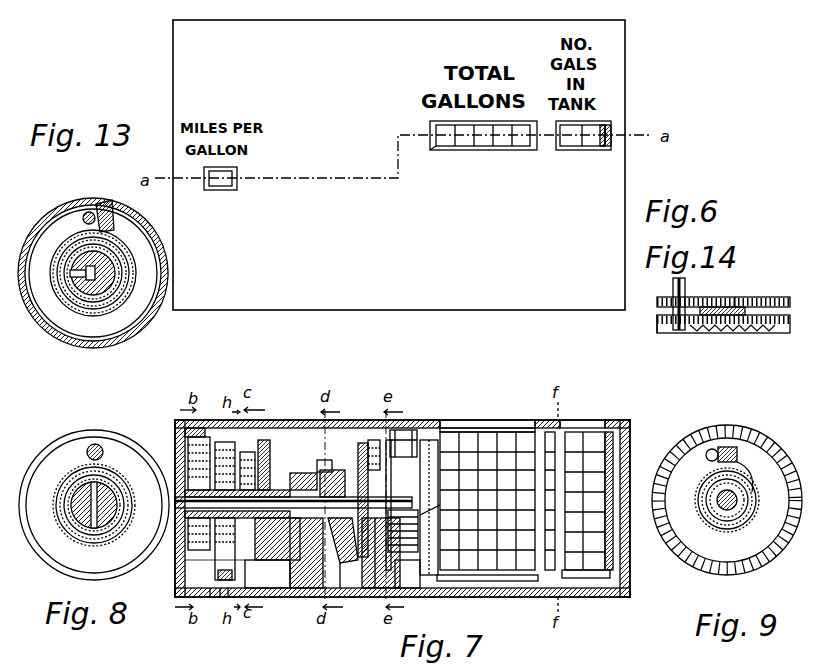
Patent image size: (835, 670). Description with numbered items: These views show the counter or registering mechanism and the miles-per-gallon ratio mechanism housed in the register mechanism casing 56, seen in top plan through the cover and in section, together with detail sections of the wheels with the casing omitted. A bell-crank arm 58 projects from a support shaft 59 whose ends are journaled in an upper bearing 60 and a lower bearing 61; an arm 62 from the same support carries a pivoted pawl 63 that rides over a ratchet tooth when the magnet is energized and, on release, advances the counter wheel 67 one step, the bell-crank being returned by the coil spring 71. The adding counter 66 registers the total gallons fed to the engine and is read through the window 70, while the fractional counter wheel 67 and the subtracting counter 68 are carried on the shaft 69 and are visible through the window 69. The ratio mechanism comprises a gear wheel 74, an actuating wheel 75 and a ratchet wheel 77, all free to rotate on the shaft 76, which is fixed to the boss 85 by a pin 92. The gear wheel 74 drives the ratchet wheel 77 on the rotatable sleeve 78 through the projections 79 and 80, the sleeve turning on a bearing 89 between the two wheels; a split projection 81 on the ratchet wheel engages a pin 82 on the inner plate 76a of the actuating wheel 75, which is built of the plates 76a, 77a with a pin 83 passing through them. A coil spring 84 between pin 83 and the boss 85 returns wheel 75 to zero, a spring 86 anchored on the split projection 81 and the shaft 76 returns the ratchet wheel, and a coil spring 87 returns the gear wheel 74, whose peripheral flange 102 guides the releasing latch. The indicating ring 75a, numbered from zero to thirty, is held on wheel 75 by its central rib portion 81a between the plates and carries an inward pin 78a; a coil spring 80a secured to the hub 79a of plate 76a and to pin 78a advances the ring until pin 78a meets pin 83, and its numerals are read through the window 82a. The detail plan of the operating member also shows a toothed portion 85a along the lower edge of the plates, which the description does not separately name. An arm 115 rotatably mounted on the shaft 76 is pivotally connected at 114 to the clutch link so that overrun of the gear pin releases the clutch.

In FIG. 7, the register mechanism casing 56 is at (630, 445).
In FIG. 7, the bell-crank arm 58 is at (490, 470).
In FIG. 7, the shaft 59 is at (418, 535).
In FIG. 7, the upper bearing 60 is at (438, 436).
In FIG. 7, the lower bearing 61 is at (415, 565).
In FIG. 7, the arm 62 is at (456, 442).
In FIG. 7, the pawl 63 is at (548, 435).
In FIG. 6, the adding counter 66 is at (496, 149).
In FIG. 7, the adding counter 66 is at (510, 570).
In FIG. 6, the counter wheel 67 is at (577, 149).
In FIG. 7, the counter wheel 67 is at (575, 572).
In FIG. 6, the subtracting counter 68 is at (594, 148).
In FIG. 7, the subtracting counter 68 is at (598, 574).
In FIG. 6, the shaft 69 is at (590, 122).
In FIG. 7, the shaft 69 is at (590, 425).
In FIG. 6, the window 70 is at (458, 150).
In FIG. 7, the window 70 is at (509, 425).
In FIG. 7, the coil spring 71 is at (475, 530).
In FIG. 7, the gear wheel 74 is at (388, 440).
In FIG. 14, the actuating wheel 75 is at (772, 295).
In FIG. 13, the actuating wheel 75 is at (75, 240).
In FIG. 8, the actuating wheel 75 is at (83, 537).
In FIG. 9, the actuating wheel 75 is at (757, 463).
In FIG. 7, the actuating wheel 75 is at (205, 565).
In FIG. 13, the indicating ring 75a is at (96, 337).
In FIG. 8, the indicating ring 75a is at (72, 440).
In FIG. 7, the indicating ring 75a is at (247, 452).
In FIG. 13, the shaft 76 is at (62, 315).
In FIG. 8, the shaft 76 is at (110, 490).
In FIG. 7, the shaft 76 is at (292, 495).
In FIG. 14, the inner plate 76a is at (657, 326).
In FIG. 7, the inner plate 76a is at (228, 598).
In FIG. 7, the ratchet wheel 77 is at (270, 440).
In FIG. 14, the plate 77a is at (730, 300).
In FIG. 7, the rotatable sleeve 78 is at (302, 472).
In FIG. 13, the pin 78a is at (114, 216).
In FIG. 7, the projection 79 is at (325, 462).
In FIG. 14, the hub 79a is at (762, 334).
In FIG. 13, the hub 79a is at (108, 288).
In FIG. 7, the hub 79a is at (222, 570).
In FIG. 7, the projection 80 is at (362, 445).
In FIG. 13, the coil spring 80a is at (55, 268).
In FIG. 7, the coil spring 80a is at (212, 578).
In FIG. 9, the split projection 81 is at (736, 448).
In FIG. 7, the split projection 81 is at (256, 462).
In FIG. 13, the central rib portion 81a is at (143, 303).
In FIG. 7, the central rib portion 81a is at (222, 582).
In FIG. 14, the pin 82 is at (716, 334).
In FIG. 9, the pin 82 is at (712, 449).
In FIG. 6, the window 82a is at (226, 190).
In FIG. 7, the window 82a is at (225, 443).
In FIG. 14, the pin 83 is at (690, 286).
In FIG. 13, the pin 83 is at (89, 212).
In FIG. 8, the pin 83 is at (97, 444).
In FIG. 7, the pin 83 is at (200, 440).
In FIG. 8, the coil spring 84 is at (64, 480).
In FIG. 8, the boss 85 is at (98, 530).
In FIG. 7, the boss 85 is at (186, 530).
In FIG. 14, the ratchet teeth 85a is at (690, 333).
In FIG. 9, the spring 86 is at (739, 532).
In FIG. 7, the spring 86 is at (272, 553).
In FIG. 7, the coil spring 87 is at (376, 562).
In FIG. 7, the bearing 89 is at (300, 545).
In FIG. 7, the pin 92 is at (185, 408).
In FIG. 7, the peripheral flange 102 is at (342, 565).
In FIG. 7, the pivot 114 is at (412, 430).
In FIG. 7, the arm 115 is at (421, 511).